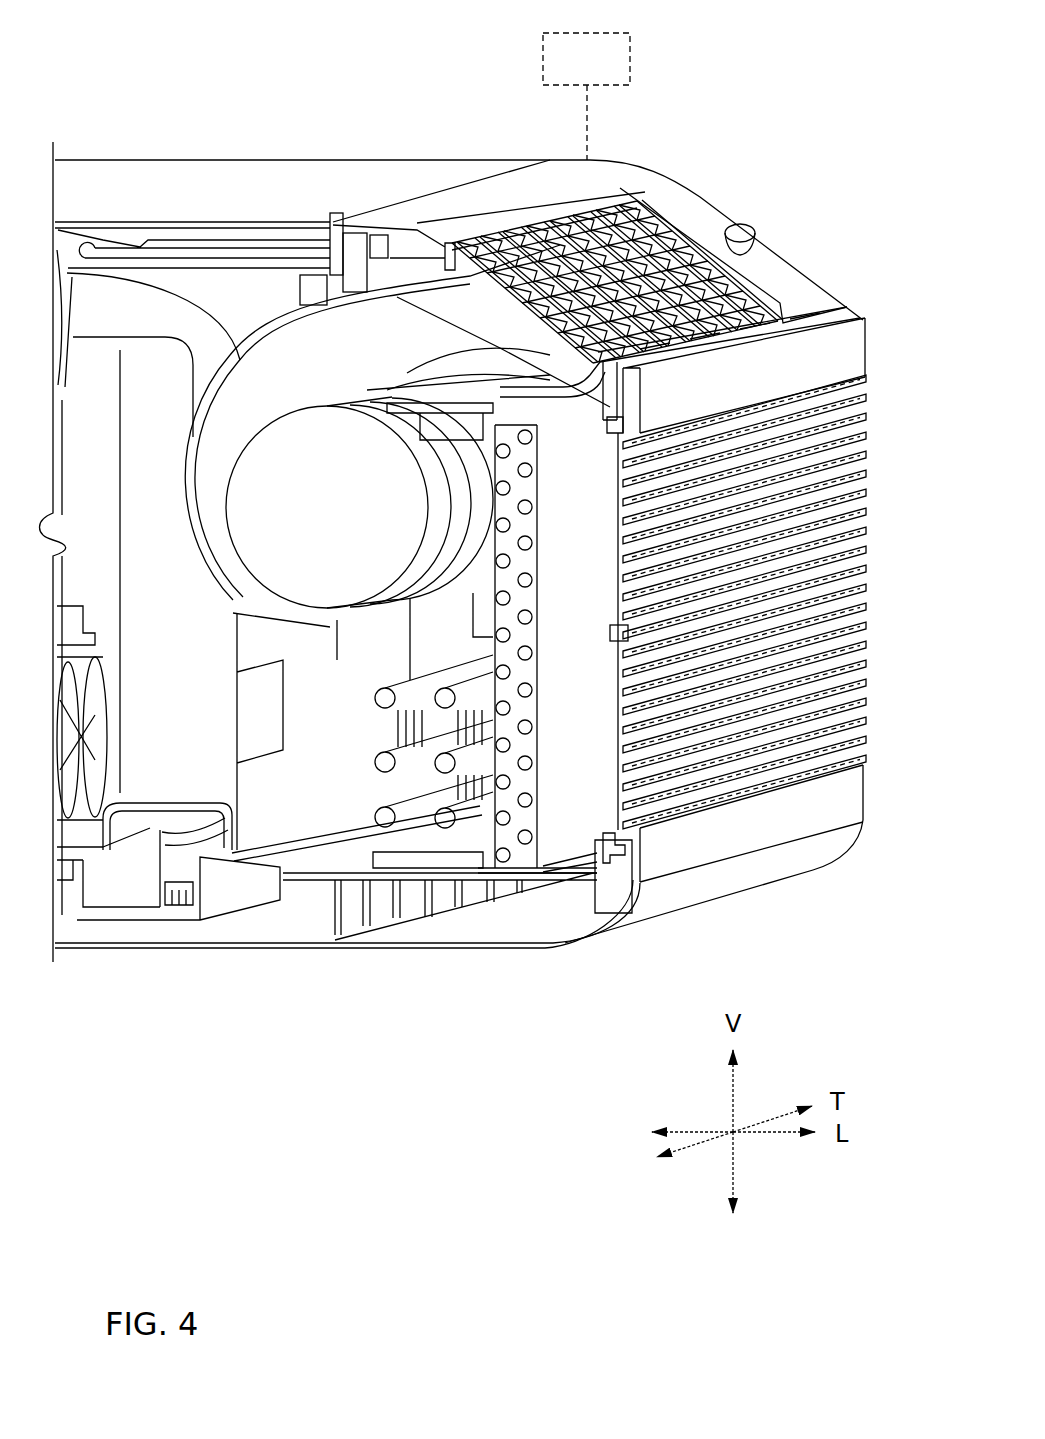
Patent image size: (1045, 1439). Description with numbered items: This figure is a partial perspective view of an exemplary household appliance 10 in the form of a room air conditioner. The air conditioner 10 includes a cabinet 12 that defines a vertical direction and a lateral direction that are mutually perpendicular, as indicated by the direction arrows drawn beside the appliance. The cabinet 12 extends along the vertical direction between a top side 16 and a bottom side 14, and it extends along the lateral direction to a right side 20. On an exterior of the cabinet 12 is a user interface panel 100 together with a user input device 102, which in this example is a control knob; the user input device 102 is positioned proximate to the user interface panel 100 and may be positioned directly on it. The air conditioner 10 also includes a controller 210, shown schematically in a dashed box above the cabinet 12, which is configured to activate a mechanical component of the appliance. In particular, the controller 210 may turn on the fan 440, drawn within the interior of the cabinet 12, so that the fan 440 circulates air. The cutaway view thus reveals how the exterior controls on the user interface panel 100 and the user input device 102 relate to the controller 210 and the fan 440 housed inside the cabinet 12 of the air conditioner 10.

The appliance 10 is at (120, 95).
The cabinet 12 is at (207, 172).
The bottom side 14 is at (198, 958).
The top side 16 is at (293, 196).
The right side 20 is at (872, 811).
The user interface panel 100 is at (773, 282).
The user input device 102 is at (742, 228).
The controller 210 is at (608, 72).
The fan 440 is at (293, 486).